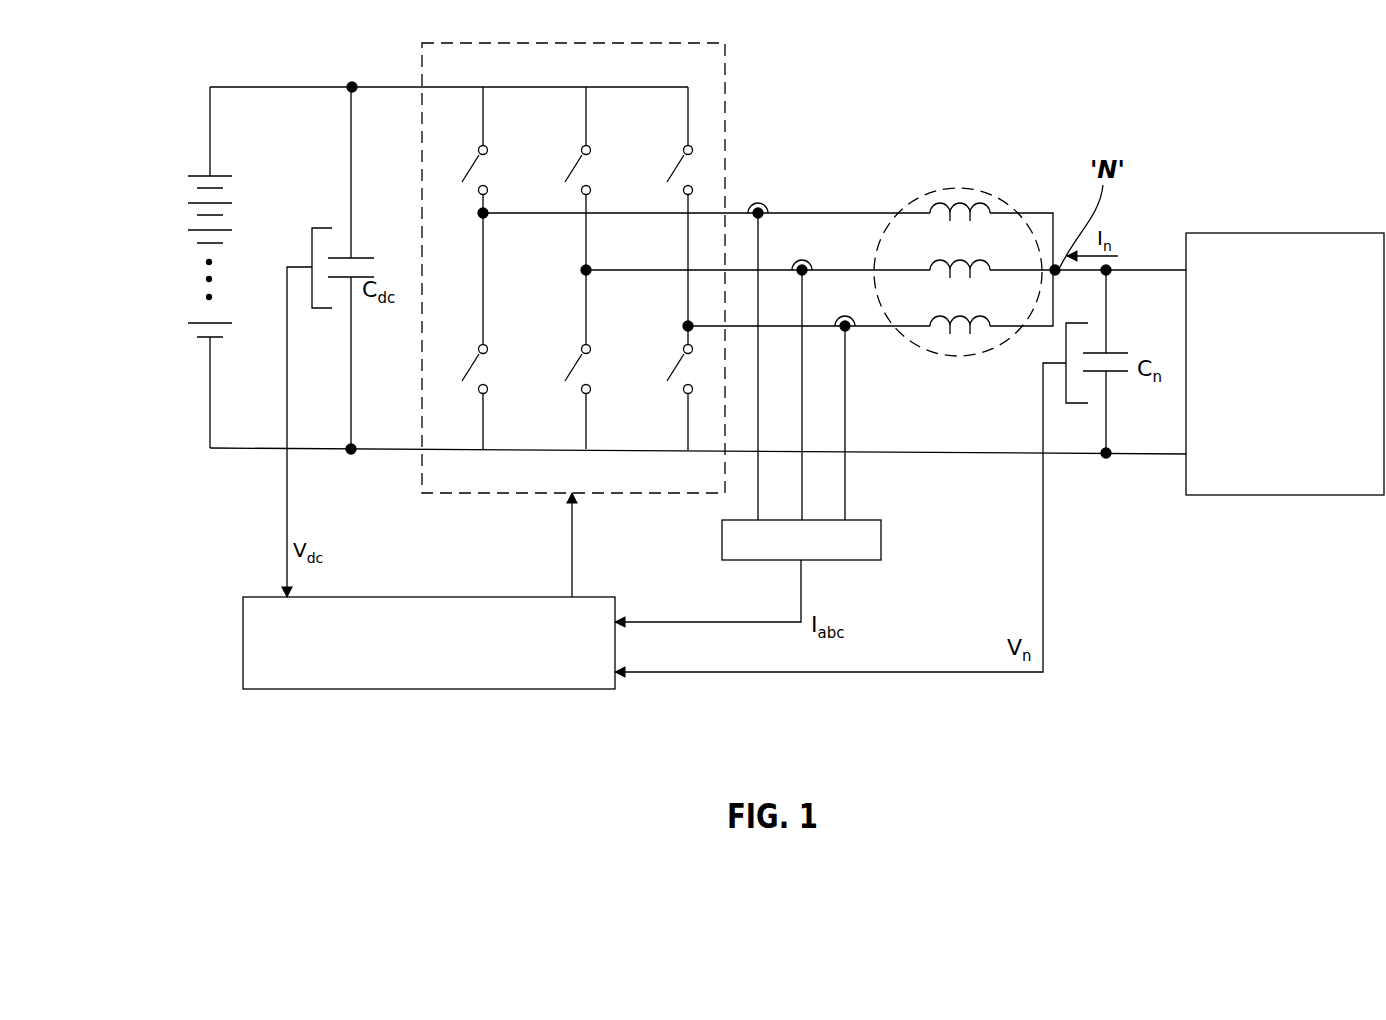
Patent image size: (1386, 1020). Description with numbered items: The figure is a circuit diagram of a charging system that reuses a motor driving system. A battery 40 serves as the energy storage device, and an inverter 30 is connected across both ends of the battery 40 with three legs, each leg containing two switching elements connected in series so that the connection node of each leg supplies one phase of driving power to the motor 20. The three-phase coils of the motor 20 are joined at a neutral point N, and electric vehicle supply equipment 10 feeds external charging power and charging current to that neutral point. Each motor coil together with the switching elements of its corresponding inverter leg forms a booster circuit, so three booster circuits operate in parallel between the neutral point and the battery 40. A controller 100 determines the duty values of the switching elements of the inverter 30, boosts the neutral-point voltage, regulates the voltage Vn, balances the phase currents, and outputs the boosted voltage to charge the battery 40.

The electric vehicle supply equipment (EVSE) 10 is at (1285, 233).
The motor 20 is at (960, 187).
The inverter 30 is at (725, 133).
The battery 40 is at (190, 275).
The controller 100 is at (448, 690).